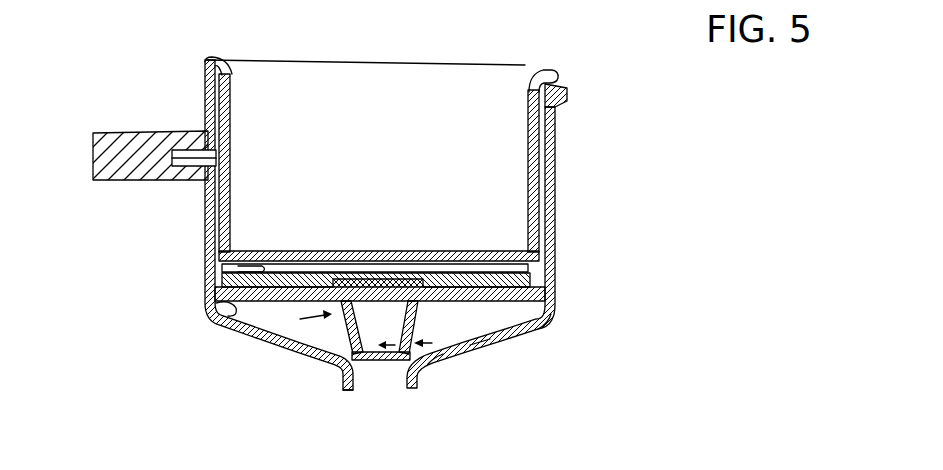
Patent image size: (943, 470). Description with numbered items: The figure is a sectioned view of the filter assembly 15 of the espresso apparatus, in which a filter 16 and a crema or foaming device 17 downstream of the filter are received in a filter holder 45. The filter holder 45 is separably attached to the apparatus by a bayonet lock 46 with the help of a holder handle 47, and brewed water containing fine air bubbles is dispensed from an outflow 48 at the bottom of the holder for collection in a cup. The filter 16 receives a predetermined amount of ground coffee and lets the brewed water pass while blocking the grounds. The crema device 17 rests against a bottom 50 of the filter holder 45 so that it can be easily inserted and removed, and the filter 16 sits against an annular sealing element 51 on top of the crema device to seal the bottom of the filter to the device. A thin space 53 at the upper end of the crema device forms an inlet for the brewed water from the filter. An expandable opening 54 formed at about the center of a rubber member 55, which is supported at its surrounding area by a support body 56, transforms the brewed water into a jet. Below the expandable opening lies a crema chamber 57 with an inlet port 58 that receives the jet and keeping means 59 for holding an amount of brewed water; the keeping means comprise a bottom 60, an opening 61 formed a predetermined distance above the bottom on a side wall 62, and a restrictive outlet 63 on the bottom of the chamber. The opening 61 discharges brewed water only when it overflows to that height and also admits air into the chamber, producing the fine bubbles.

The filter assembly 15 is at (412, 61).
The filter 16 is at (532, 83).
The crema device 17 is at (247, 340).
The filter holder 45 is at (556, 160).
The bayonet lock 46 is at (567, 100).
The holder handle 47 is at (108, 133).
The outflow 48 is at (349, 393).
The bottom 50 is at (216, 316).
The annular sealing element 51 is at (547, 277).
The thin space 53 is at (240, 262).
The expandable opening 54 is at (342, 357).
The rubber member 55 is at (547, 301).
The support body 56 is at (540, 330).
The crema chamber 57 is at (424, 350).
The inlet port 58 is at (432, 341).
The keeping means 59 is at (426, 387).
The bottom 60 is at (393, 363).
The opening 61 is at (305, 319).
The side wall 62 is at (418, 362).
The restrictive outlet 63 is at (372, 361).